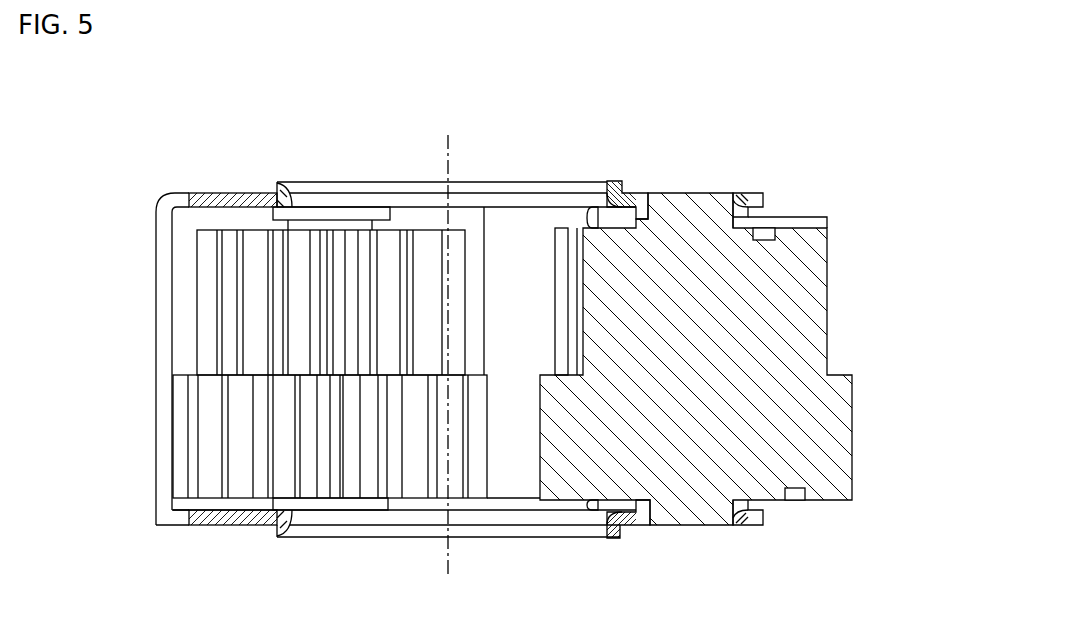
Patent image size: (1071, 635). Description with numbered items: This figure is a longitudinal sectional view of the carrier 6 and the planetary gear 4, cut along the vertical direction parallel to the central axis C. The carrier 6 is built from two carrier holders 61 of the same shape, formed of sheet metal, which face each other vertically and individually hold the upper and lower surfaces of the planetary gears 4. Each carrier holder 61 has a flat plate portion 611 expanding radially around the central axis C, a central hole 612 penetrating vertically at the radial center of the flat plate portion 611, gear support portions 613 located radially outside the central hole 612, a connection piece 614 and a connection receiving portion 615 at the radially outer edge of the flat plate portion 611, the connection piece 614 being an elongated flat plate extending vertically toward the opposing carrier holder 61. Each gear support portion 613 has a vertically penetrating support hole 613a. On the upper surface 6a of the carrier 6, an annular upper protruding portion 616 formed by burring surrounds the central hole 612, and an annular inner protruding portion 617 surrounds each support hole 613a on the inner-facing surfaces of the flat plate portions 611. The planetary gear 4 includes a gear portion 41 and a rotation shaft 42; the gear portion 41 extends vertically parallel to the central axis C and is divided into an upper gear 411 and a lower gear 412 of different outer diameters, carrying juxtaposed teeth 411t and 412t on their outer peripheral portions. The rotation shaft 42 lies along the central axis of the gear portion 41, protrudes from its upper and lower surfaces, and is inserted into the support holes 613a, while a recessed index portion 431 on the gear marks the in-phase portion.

The planetary gear 4 is at (462, 506).
The gear portion 41 is at (864, 365).
The upper gear 411 is at (834, 281).
The teeth 411t is at (828, 304).
The lower gear 412 is at (857, 428).
The teeth 412t is at (853, 453).
The rotation shaft 42 is at (660, 191).
The index portion 431 is at (776, 234).
The carrier 6 is at (414, 135).
The upper surface 6a is at (246, 191).
The carrier holder 61 is at (386, 172).
The flat plate portion 611 is at (196, 188).
The central hole 612 is at (553, 181).
The gear support portion 613 is at (733, 189).
The support hole 613a is at (745, 197).
The connection piece 614 is at (151, 334).
The connection receiving portion 615 is at (181, 531).
The upper protruding portion 616 is at (618, 181).
The inner protruding portion 617 is at (308, 206).
The central axis C is at (452, 143).